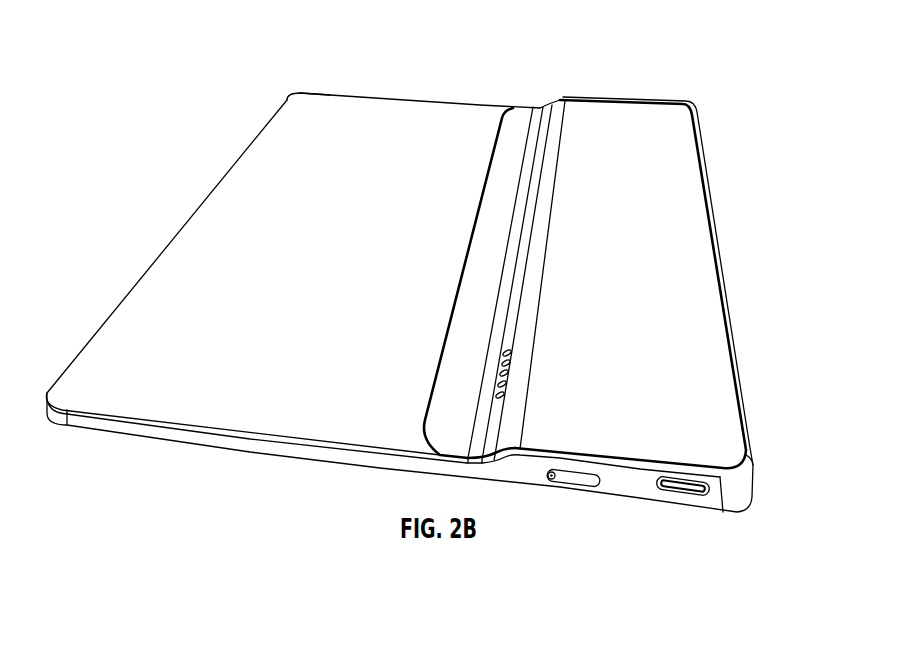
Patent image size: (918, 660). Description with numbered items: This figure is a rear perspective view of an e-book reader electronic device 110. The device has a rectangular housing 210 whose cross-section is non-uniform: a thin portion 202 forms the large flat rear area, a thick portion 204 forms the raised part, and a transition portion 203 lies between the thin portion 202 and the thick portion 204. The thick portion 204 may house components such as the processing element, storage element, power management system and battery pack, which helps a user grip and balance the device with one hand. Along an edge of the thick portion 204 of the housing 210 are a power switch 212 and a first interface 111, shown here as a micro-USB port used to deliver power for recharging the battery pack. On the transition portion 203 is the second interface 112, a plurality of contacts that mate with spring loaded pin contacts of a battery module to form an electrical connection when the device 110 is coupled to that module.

The electronic device 110 is at (190, 94).
The first interface 111 is at (677, 491).
The second interface 112 is at (493, 375).
The thin portion 202 is at (429, 84).
The transition portion 203 is at (544, 94).
The thick portion 204 is at (647, 93).
The housing 210 is at (323, 93).
The power switch 212 is at (553, 480).